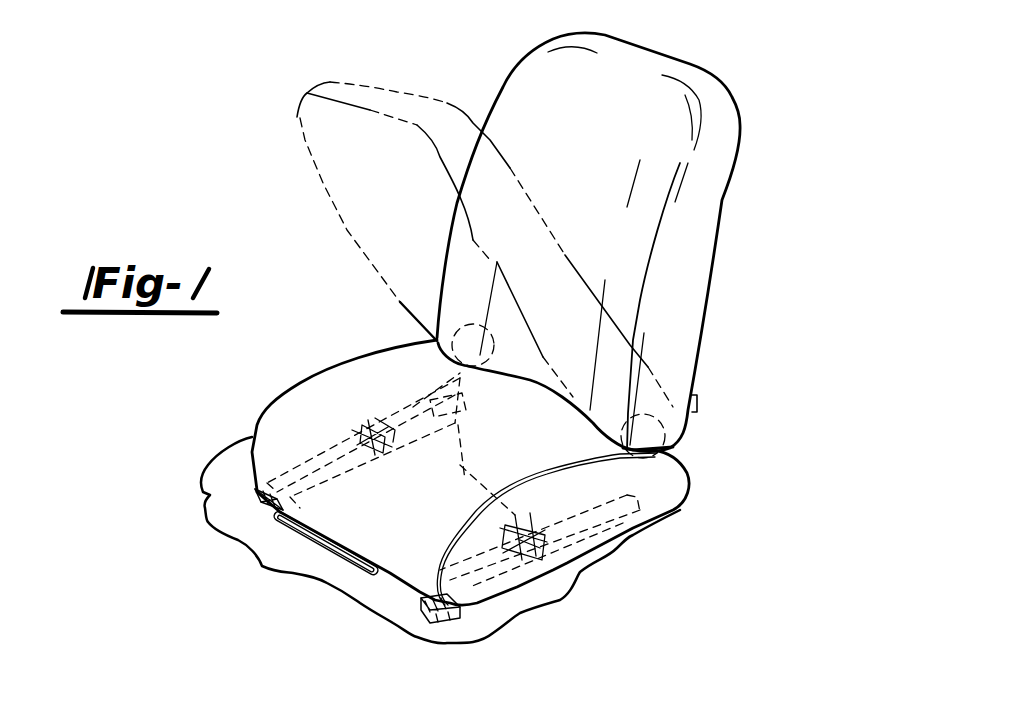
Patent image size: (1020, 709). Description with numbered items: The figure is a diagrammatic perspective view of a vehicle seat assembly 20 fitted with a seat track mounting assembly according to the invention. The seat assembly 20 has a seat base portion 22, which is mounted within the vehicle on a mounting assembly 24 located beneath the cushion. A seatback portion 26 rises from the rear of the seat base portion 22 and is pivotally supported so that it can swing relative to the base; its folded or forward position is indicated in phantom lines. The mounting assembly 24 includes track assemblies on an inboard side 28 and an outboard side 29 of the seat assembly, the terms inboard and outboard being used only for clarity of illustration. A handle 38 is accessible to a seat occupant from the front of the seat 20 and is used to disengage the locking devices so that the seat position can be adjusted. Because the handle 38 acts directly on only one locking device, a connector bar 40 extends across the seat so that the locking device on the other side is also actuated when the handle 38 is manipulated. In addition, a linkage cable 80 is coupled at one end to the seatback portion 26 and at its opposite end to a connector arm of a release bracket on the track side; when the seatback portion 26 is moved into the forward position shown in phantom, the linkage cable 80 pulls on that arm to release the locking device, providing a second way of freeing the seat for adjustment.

The vehicle seat assembly 20 is at (745, 262).
The seat base portion 22 is at (667, 477).
The mounting assembly 24 is at (407, 630).
The seatback portion 26 is at (678, 334).
The inboard side 28 is at (232, 474).
The outboard side 29 is at (541, 605).
The handle 38 is at (320, 540).
The connector bar 40 is at (460, 432).
The linkage cable 80 is at (392, 375).